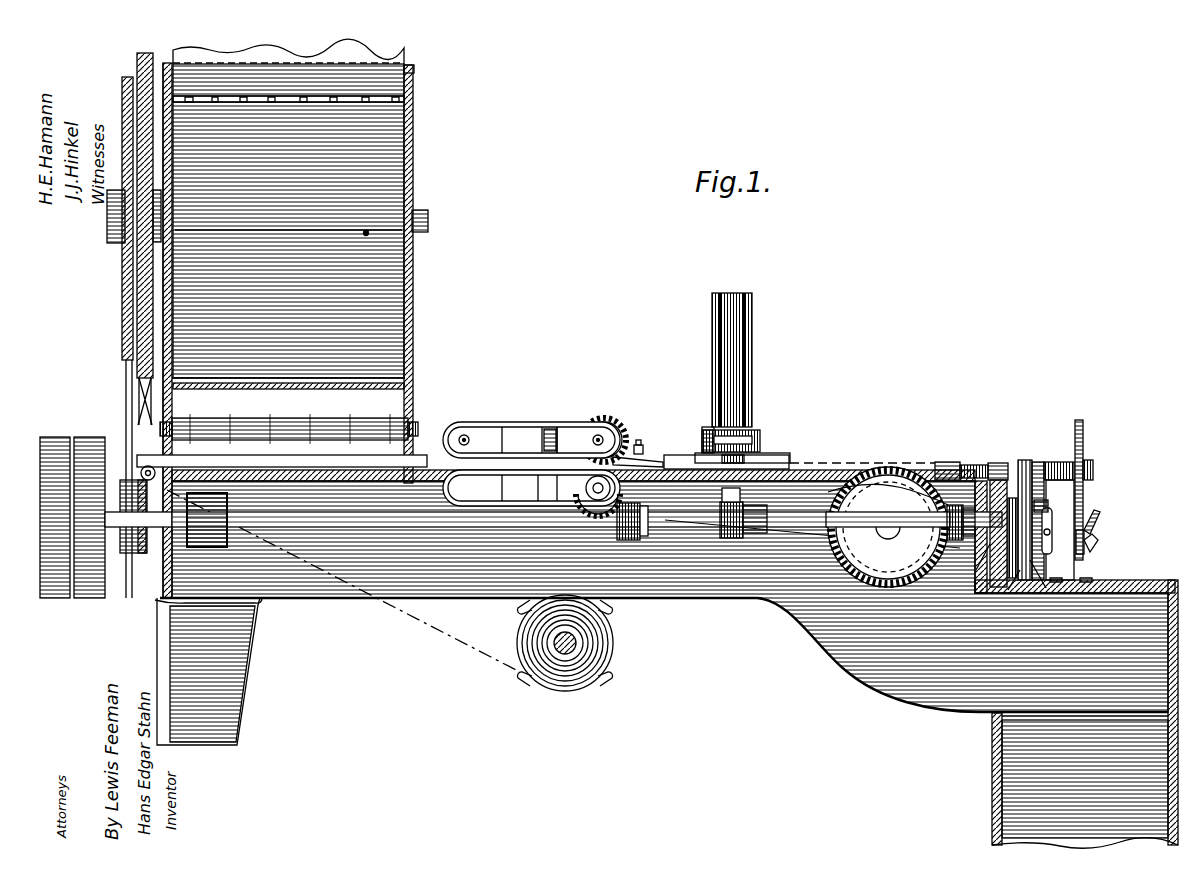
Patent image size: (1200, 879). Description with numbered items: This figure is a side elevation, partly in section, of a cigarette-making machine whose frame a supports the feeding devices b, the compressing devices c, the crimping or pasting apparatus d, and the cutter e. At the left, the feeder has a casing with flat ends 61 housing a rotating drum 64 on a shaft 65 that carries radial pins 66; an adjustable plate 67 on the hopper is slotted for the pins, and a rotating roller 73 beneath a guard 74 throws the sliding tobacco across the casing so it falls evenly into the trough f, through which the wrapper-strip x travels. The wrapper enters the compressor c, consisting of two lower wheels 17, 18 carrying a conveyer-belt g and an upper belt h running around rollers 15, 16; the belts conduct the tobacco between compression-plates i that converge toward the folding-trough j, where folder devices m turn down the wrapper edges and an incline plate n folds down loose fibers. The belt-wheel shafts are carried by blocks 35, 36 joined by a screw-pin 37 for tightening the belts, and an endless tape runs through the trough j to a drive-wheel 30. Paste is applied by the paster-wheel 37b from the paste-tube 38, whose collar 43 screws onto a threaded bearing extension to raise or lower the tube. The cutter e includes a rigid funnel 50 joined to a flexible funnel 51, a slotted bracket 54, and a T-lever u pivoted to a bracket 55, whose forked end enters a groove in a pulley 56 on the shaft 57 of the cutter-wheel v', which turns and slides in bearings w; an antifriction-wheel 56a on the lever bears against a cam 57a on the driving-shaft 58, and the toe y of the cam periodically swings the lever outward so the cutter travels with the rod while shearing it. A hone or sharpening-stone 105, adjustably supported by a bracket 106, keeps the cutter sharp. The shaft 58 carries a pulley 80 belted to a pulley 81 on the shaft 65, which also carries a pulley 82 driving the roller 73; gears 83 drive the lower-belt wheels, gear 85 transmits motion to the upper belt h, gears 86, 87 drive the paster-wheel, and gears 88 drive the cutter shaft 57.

The frame a is at (762, 596).
The feeding devices b is at (455, 112).
The compressing devices c is at (618, 404).
The crimping or pasting apparatus d is at (683, 288).
The cutter e is at (1090, 424).
The trough f is at (282, 456).
The conveyer-belt g is at (521, 439).
The upper belt h is at (516, 428).
The compression-plates i is at (530, 452).
The folding-trough j is at (796, 466).
The folder devices m is at (694, 462).
The incline plate n is at (640, 464).
The T-lever u is at (1040, 536).
The bearings w is at (1040, 512).
The wrapper-strip x is at (406, 612).
The toe y is at (1034, 552).
The cutter-wheel v' is at (1092, 489).
The roller 15 is at (454, 434).
The roller 16 is at (620, 446).
The lower wheel 17 is at (452, 488).
The lower wheel 18 is at (596, 500).
The drive-wheel 30 is at (900, 527).
The block 35 is at (474, 465).
The block 36 is at (552, 464).
The screw-pin 37 is at (552, 430).
The paster-wheel 37b is at (710, 438).
The paste-tube 38 is at (744, 364).
The collar 43 is at (760, 444).
The funnel 50 is at (940, 462).
The flexible funnel 51 is at (970, 464).
The bracket 54 is at (1050, 590).
The bracket 55 is at (1070, 558).
The pulley 56 is at (1030, 460).
The antifriction-wheel 56a is at (976, 570).
The shaft 57 is at (1042, 464).
The cam 57a is at (1010, 590).
The driving-shaft 58 is at (440, 520).
The flat ends 61 is at (410, 82).
The cylindrical drum 64 is at (312, 236).
The shaft 65 is at (420, 226).
The radial pins 66 is at (366, 232).
The adjustable plate 67 is at (288, 82).
The rotating roller 73 is at (330, 420).
The guard 74 is at (270, 388).
The pulley 80 is at (138, 556).
The pulley 81 is at (121, 337).
The pulley 82 is at (121, 270).
The gears 83 is at (646, 514).
The gear 85 is at (622, 430).
The gear 86 is at (722, 510).
The gear 87 is at (756, 540).
The gears 88 is at (998, 465).
The hone or sharpening-stone 105 is at (1096, 512).
The bracket 106 is at (1101, 543).